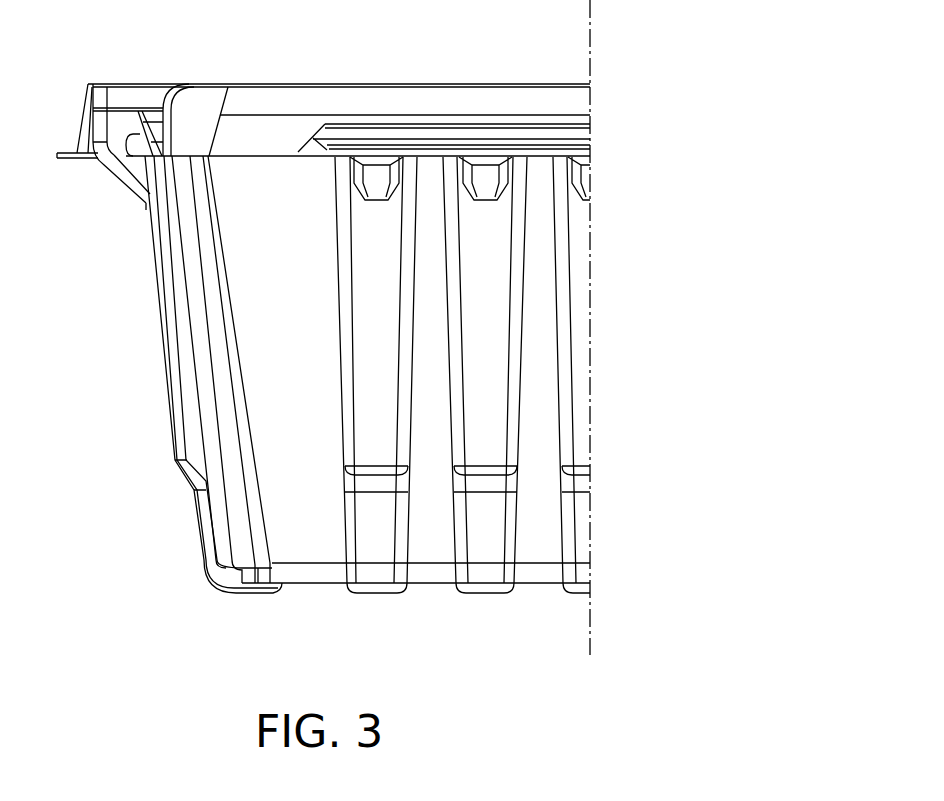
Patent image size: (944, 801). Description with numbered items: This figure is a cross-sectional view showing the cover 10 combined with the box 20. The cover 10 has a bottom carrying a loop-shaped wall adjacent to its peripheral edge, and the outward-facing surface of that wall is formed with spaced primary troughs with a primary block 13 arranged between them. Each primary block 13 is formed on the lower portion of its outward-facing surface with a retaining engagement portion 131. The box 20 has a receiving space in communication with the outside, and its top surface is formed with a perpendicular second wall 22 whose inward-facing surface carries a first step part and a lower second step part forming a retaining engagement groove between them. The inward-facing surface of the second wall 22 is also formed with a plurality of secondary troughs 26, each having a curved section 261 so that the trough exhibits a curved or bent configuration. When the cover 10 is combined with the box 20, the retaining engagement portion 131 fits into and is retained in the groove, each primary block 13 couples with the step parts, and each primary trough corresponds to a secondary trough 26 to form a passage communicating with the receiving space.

The cover 10 is at (267, 84).
The primary block 13 is at (140, 110).
The retaining engagement portion 131 is at (126, 160).
The box 20 is at (157, 297).
The second wall 22 is at (87, 108).
The secondary trough 26 is at (103, 92).
The curved section 261 is at (97, 160).